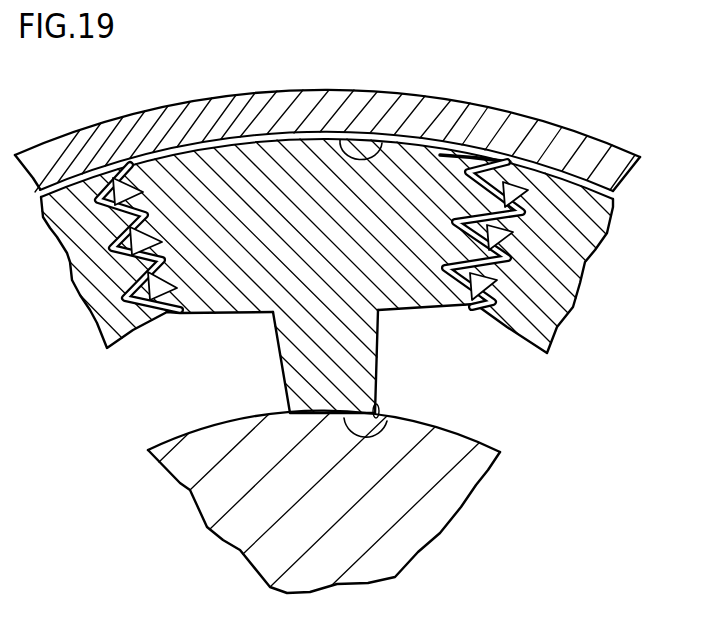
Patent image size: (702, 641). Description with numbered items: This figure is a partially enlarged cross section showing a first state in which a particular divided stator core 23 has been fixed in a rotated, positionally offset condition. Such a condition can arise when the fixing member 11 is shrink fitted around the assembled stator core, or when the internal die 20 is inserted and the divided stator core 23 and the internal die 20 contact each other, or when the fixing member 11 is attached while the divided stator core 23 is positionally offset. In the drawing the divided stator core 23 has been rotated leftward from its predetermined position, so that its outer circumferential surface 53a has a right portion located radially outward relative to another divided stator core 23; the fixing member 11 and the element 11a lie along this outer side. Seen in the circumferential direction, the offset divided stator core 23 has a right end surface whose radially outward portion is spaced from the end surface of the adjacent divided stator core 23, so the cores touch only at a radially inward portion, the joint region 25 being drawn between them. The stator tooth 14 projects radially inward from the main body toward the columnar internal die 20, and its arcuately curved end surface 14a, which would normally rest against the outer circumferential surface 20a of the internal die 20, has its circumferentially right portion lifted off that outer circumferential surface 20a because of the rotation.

The fixing member 11 is at (305, 117).
The protrusion of housing 11a is at (373, 148).
The outer circumferential surface 53a is at (233, 140).
The positionally offset divided stator core 23 is at (78, 215).
The dovetail joint 25 is at (494, 178).
The stator tooth 14 is at (380, 345).
The end surface 14a is at (385, 414).
The internal die 20 is at (440, 436).
The outer circumferential surface 20a is at (472, 452).